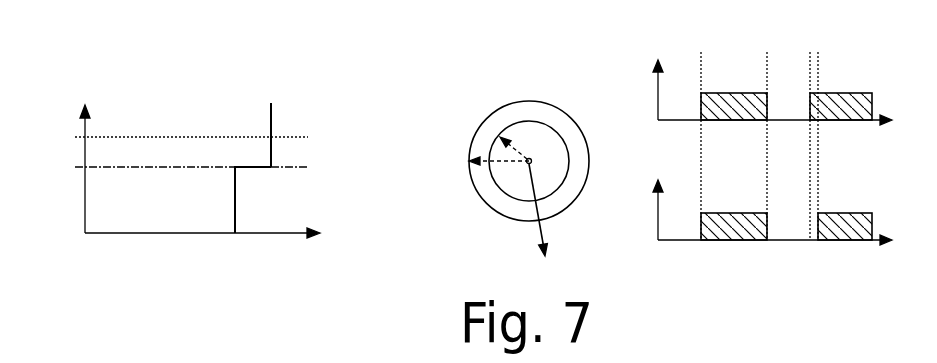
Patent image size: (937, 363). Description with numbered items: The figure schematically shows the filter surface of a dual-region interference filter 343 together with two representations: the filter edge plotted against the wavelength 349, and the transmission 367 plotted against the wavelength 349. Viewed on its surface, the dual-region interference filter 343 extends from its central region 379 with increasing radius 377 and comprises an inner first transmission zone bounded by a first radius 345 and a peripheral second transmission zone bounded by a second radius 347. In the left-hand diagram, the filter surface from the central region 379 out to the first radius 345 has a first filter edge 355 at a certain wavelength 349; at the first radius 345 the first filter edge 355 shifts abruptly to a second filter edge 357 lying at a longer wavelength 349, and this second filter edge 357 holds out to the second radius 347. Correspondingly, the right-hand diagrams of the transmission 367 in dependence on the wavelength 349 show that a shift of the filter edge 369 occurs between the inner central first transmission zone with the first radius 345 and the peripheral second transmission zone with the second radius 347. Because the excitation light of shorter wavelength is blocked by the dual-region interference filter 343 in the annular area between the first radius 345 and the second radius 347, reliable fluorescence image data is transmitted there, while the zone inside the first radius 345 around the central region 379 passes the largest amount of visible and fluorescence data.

The dual-region interference filter 343 is at (517, 88).
The first radius 345 is at (516, 148).
The second radius 347 is at (502, 165).
The wavelength 349 is at (508, 195).
The first filter edge 355 is at (232, 207).
The second filter edge 357 is at (271, 154).
The transmission 367 is at (753, 134).
The shift of the filter edge 369 is at (793, 164).
The radius 377 is at (597, 230).
The central region 379 is at (522, 170).